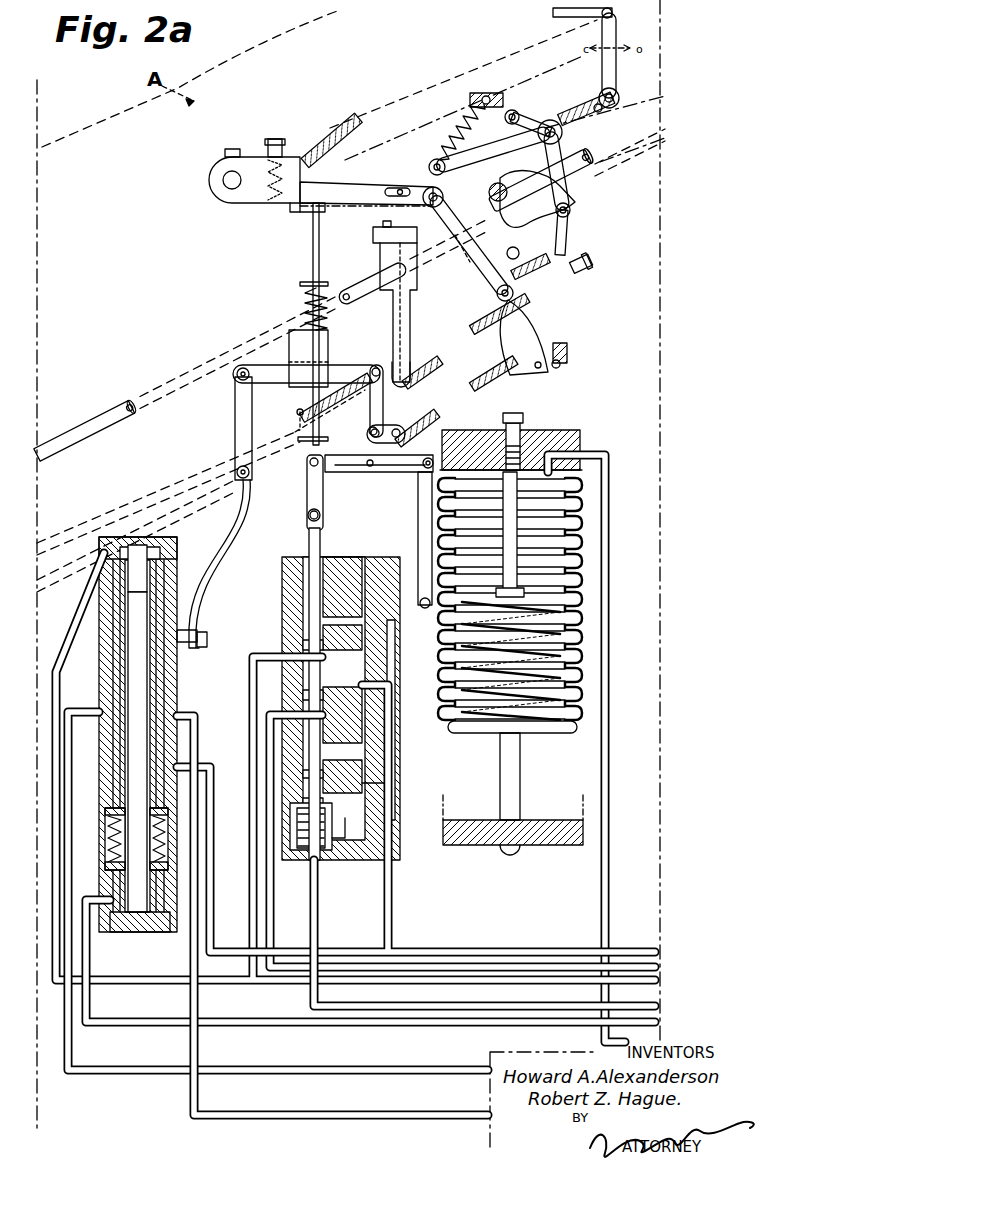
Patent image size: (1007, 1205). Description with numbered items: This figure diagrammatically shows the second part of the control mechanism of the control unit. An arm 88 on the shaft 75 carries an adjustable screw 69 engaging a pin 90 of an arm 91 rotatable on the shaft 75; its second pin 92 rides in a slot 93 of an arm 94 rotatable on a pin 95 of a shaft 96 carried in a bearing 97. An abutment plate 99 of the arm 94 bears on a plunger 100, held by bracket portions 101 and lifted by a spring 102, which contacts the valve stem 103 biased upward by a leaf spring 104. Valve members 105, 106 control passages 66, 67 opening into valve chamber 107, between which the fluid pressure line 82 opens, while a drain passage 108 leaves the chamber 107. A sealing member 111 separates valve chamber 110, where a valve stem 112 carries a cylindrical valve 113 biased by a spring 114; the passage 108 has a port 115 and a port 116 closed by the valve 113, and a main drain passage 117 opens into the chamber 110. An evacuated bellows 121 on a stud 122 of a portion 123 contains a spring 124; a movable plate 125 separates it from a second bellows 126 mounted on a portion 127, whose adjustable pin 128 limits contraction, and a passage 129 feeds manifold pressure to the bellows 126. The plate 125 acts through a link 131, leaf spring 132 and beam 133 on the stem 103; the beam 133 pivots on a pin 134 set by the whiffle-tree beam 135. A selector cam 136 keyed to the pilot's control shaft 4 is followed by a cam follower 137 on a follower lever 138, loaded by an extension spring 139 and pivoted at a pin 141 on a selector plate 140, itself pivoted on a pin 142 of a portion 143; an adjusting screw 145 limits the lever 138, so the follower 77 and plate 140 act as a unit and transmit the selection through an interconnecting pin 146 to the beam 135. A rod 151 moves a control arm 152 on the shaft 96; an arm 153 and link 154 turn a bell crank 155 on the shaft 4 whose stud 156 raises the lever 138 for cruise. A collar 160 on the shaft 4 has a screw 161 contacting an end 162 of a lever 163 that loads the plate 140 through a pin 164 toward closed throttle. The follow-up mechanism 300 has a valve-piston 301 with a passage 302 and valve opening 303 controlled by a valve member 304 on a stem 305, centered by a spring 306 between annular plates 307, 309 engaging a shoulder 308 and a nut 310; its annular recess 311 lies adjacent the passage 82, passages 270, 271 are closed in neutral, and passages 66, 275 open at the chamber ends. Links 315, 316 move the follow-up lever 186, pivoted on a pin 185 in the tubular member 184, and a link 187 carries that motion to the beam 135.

The pilot's control shaft 4 is at (580, 180).
The passage 66 is at (252, 655).
The passage 67 is at (272, 725).
The bolt 69 is at (272, 138).
The shaft 75 is at (340, 128).
The follower 77 is at (310, 160).
The fluid pressure line 82 is at (216, 902).
The arm 88 is at (245, 160).
The pin 90 is at (270, 205).
The arm 91 is at (290, 210).
The second pin 92 is at (402, 188).
The slot 93 is at (388, 190).
The arm 94 is at (345, 204).
The pin 95 is at (434, 208).
The shaft 96 is at (596, 105).
The bearing 97 is at (586, 118).
The abutment plate 99 is at (306, 213).
The plunger 100 is at (328, 345).
The bracket portions 101 is at (302, 310).
The spring 102 is at (300, 284).
The valve stem 103 is at (322, 540).
The leaf spring 104 is at (323, 470).
The valve member 105 is at (300, 643).
The valve member 106 is at (300, 694).
The valve chamber 107 is at (345, 690).
The drain passage 108 is at (362, 640).
The valve chamber 110 is at (362, 790).
The sealing member 111 is at (300, 774).
The valve stem 112 is at (300, 802).
The cylindrical valve 113 is at (318, 850).
The spring 114 is at (300, 852).
The port 115 is at (376, 566).
The port 116 is at (342, 852).
The main drain passage 117 is at (320, 920).
The evacuated bellows 121 is at (583, 690).
The stud 122 is at (520, 774).
The portion of control unit 123 is at (490, 846).
The spring 124 is at (490, 733).
The movable plate 125 is at (520, 600).
The second bellows 126 is at (582, 546).
The portion of control unit 127 is at (560, 432).
The adjustable pin 128 is at (517, 524).
The passage 129 is at (600, 880).
The link 131 is at (418, 518).
The leaf spring 132 is at (432, 458).
The beam 133 is at (380, 472).
The pin 134 is at (323, 512).
The whiffle-tree beam 135 is at (386, 427).
The selector cam 136 is at (570, 222).
The cam follower 137 is at (463, 255).
The follower lever 138 is at (478, 270).
The extension spring 139 is at (455, 133).
The selector plate 140 is at (545, 308).
The pin 141 is at (494, 322).
The pin 142 is at (557, 368).
The portion of control unit 143 is at (568, 354).
The adjusting screw 145 is at (570, 262).
The interconnecting pin 146 is at (496, 380).
The rod 151 is at (553, 14).
The control arm 152 is at (616, 62).
The arm 153 is at (530, 118).
The link 154 is at (518, 142).
The bell crank 155 is at (530, 192).
The stud 156 is at (556, 240).
The collar 160 is at (408, 288).
The adjustable screw 161 is at (389, 228).
The end of lever 162 is at (373, 237).
The lever 163 is at (404, 345).
The pin 164 is at (432, 362).
The tubular member 184 is at (335, 405).
The pin 185 is at (297, 412).
The follow-up lever 186 is at (245, 365).
The link 187 is at (378, 364).
The passage 270 is at (125, 1073).
The passage 271 is at (238, 1118).
The passage 275 is at (152, 1024).
The follow-up mechanism 300 is at (100, 660).
The valve-piston 301 is at (160, 680).
The passage 302 is at (177, 636).
The valve opening 303 is at (170, 540).
The valve member 304 is at (130, 545).
The stem 305 is at (147, 722).
The spring 306 is at (108, 845).
The annular plate 307 is at (105, 812).
The shoulder 308 is at (168, 818).
The annular plate 309 is at (105, 866).
The nut 310 is at (125, 932).
The annular recess 311 is at (160, 750).
The links 315 is at (221, 570).
The bar 316 is at (235, 430).